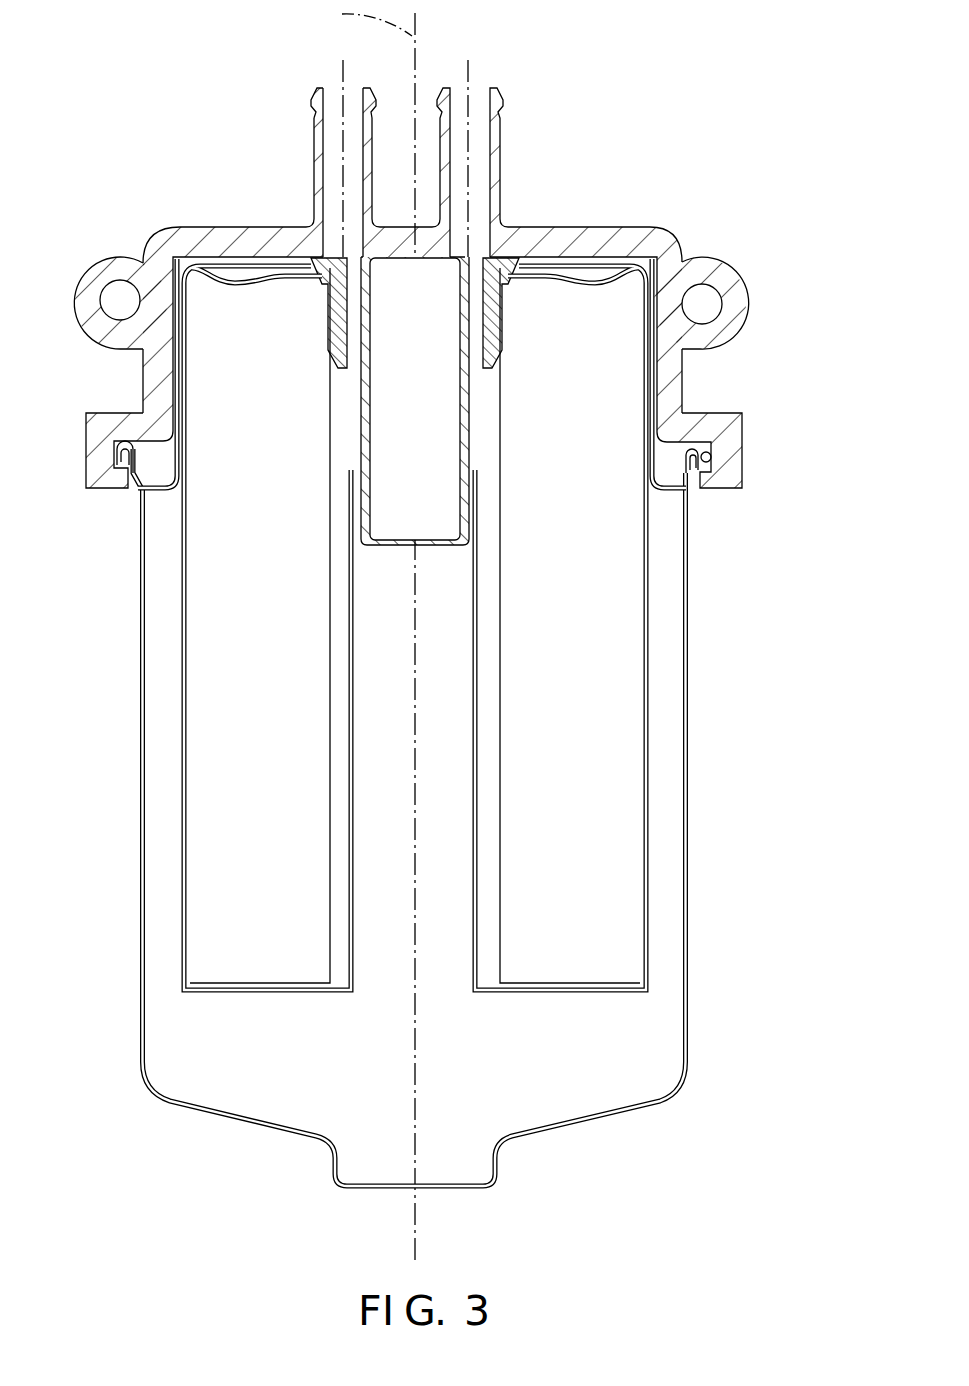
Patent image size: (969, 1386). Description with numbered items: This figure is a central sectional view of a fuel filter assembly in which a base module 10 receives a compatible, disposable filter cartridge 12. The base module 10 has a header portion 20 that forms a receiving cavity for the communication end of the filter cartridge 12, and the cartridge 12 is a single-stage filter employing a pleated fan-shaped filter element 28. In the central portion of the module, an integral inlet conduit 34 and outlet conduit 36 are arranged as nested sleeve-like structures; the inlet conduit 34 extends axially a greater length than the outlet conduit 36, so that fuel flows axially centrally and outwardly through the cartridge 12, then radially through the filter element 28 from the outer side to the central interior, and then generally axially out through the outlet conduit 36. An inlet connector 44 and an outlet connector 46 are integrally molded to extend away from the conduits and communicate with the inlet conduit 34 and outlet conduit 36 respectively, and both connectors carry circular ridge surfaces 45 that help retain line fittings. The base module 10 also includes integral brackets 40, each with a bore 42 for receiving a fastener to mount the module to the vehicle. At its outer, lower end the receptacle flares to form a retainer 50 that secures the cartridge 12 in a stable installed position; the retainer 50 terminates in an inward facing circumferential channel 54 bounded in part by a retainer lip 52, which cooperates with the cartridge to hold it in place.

The base module 10 is at (112, 200).
The filter cartridge 12 is at (141, 789).
The header portion 20 is at (580, 227).
The filter element 28 is at (615, 651).
The inlet conduit 34 is at (469, 459).
The outlet conduit 36 is at (497, 343).
The bracket 40 is at (90, 266).
The bore 42 is at (101, 302).
The inlet connector 44 is at (494, 151).
The circular ridge surfaces 45 is at (312, 101).
The outlet connector 46 is at (313, 170).
The retainer 50 is at (86, 422).
The retainer lip 52 is at (712, 480).
The circumferential channel 54 is at (726, 462).